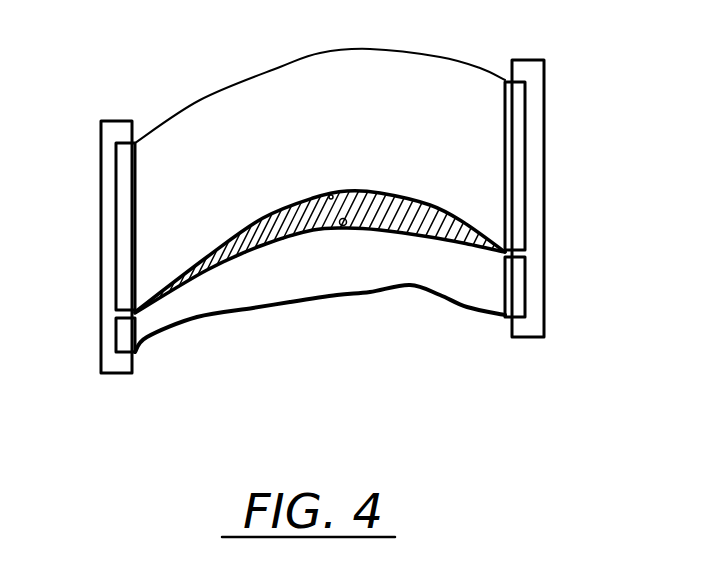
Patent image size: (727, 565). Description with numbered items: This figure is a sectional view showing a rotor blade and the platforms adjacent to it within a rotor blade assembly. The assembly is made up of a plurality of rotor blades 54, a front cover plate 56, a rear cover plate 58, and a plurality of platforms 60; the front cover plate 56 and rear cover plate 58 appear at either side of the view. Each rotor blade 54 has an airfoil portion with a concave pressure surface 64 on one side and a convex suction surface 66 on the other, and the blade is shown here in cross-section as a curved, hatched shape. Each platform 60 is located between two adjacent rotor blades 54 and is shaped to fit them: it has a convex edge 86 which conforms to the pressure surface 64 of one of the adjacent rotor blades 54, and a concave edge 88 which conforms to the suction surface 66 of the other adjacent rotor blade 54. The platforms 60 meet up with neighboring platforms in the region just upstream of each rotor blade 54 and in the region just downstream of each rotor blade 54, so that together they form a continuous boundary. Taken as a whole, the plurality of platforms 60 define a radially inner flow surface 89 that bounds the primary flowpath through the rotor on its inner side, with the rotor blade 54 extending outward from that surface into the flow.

The rotor blade 54 is at (320, 219).
The front cover plate 56 is at (118, 120).
The rear cover plate 58 is at (532, 60).
The platform 60 is at (383, 107).
The concave pressure surface 64 is at (277, 240).
The convex suction surface 66 is at (255, 218).
The convex edge 86 is at (342, 228).
The concave edge 88 is at (345, 190).
The radially inner flow surface 89 is at (277, 62).